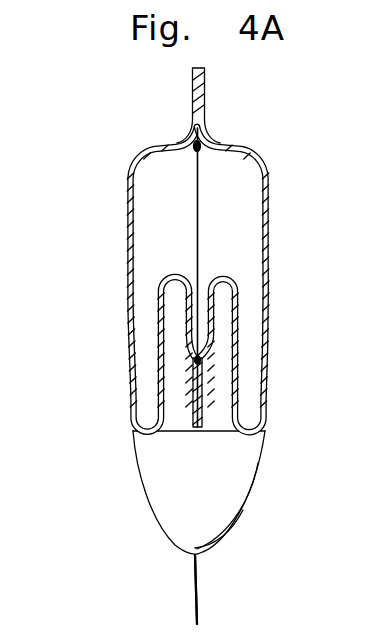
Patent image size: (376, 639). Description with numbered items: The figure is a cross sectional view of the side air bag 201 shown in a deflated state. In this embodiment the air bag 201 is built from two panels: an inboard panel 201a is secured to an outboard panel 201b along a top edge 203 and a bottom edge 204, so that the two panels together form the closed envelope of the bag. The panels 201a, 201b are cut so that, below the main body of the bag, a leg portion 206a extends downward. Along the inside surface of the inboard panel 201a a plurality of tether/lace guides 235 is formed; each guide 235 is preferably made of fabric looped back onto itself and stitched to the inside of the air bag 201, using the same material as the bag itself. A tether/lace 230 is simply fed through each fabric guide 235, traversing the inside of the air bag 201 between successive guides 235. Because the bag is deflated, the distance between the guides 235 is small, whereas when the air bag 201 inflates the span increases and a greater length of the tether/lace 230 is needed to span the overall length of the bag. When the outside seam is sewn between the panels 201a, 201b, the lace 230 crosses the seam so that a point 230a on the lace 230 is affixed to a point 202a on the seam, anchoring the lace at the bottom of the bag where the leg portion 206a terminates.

The air bag 201 is at (197, 276).
The inboard panel 201a is at (268, 192).
The outboard panel 201b is at (128, 192).
The point on the seam 202a is at (198, 553).
The top edge 203 is at (192, 92).
The bottom edge 204 is at (197, 406).
The leg portion 206a is at (257, 457).
The tether/lace 230 is at (197, 228).
The point on the lace 230a is at (273, 589).
The tether/lace guide 235 is at (203, 143).